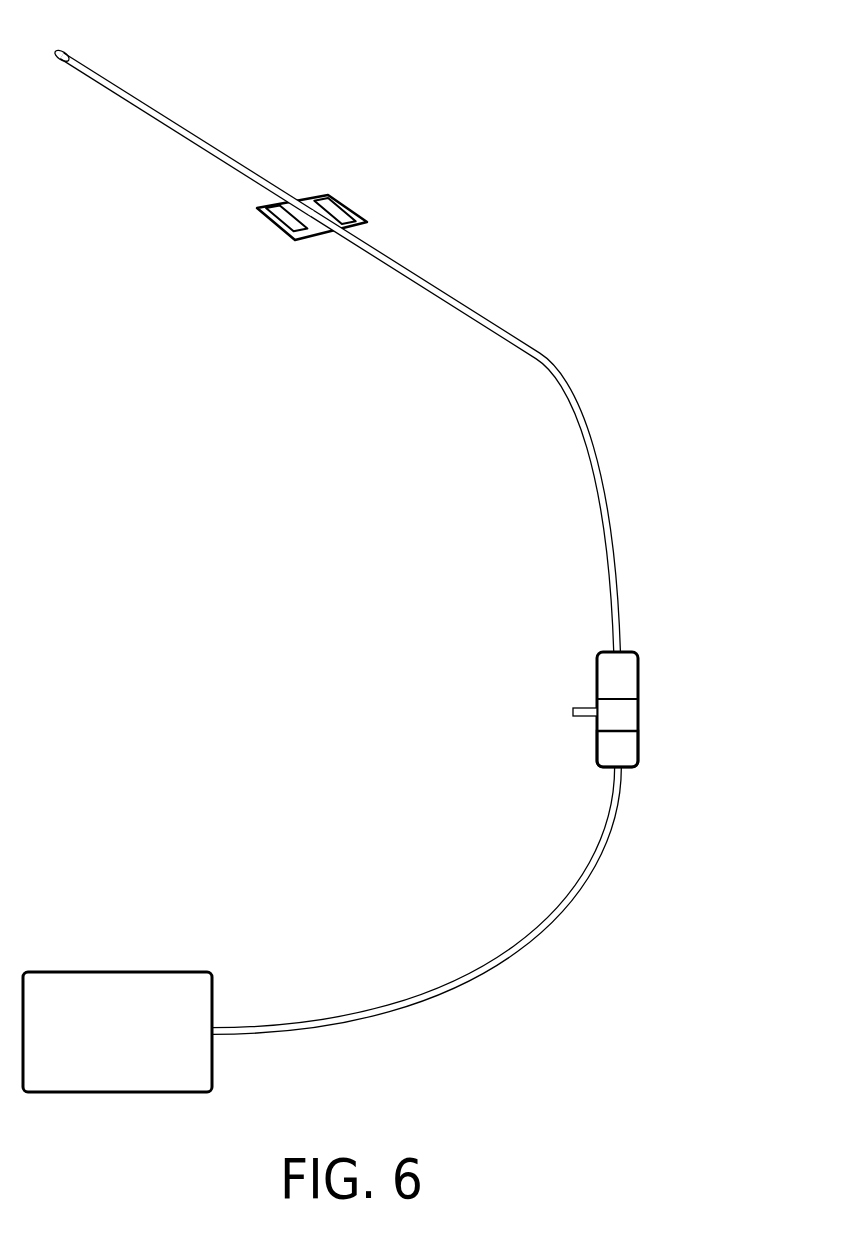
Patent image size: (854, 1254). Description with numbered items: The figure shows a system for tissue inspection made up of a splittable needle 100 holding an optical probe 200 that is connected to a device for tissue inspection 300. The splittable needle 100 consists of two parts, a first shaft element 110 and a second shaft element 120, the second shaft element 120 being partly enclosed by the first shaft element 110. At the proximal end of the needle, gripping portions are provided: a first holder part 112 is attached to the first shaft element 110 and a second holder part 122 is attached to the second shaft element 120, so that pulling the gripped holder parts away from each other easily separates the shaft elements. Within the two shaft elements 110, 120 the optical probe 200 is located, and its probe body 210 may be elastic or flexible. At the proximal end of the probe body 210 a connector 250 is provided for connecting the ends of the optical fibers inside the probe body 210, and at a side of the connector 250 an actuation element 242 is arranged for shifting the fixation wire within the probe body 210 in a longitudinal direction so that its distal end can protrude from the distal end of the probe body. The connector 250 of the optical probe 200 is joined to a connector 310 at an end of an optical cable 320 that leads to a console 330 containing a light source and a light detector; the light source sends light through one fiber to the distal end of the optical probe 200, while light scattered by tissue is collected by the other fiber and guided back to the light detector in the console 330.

The splittable needle 100 is at (251, 165).
The first shaft element 110 is at (126, 101).
The first holder part 112 is at (274, 225).
The second shaft element 120 is at (158, 111).
The second holder part 122 is at (346, 207).
The optical probe 200 is at (512, 461).
The probe body 210 is at (528, 354).
The actuation element 242 is at (573, 712).
The connector 250 is at (625, 677).
The device for tissue inspection 300 is at (321, 939).
The connector 310 is at (625, 748).
The optical cable 320 is at (527, 947).
The console 330 is at (112, 1075).